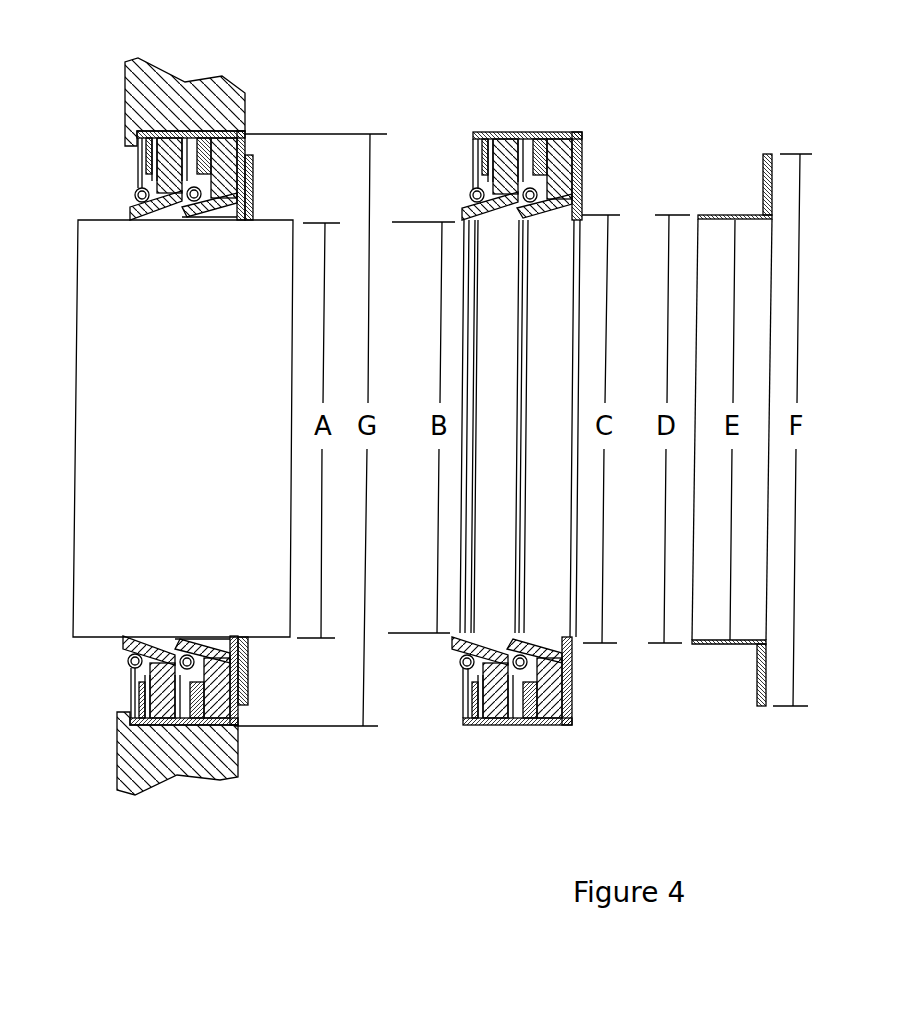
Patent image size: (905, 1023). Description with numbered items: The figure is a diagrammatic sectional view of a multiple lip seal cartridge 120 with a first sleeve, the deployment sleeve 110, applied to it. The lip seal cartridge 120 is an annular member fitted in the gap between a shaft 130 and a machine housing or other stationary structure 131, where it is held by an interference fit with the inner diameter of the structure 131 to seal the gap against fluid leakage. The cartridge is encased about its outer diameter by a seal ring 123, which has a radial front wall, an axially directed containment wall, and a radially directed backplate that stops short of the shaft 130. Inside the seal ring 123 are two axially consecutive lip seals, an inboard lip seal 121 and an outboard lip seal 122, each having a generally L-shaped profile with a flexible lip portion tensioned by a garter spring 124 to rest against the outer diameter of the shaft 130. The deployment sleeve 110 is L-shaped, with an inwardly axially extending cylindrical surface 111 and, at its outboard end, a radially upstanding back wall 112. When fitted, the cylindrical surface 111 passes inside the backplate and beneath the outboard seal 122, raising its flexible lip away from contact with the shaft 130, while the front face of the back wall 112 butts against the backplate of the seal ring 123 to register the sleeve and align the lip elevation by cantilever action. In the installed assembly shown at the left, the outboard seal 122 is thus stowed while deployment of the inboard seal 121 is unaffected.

The deployment sleeve 110 is at (539, 393).
The cylindrical surface 111 is at (720, 214).
The back wall 112 is at (774, 180).
The lip seal cartridge 120 is at (347, 364).
The inboard lip seal 121 is at (466, 168).
The outboard lip seal 122 is at (572, 165).
The seal ring 123 is at (518, 104).
The garter spring 124 is at (429, 683).
The shaft 130 is at (205, 430).
The stationary structure 131 is at (125, 78).